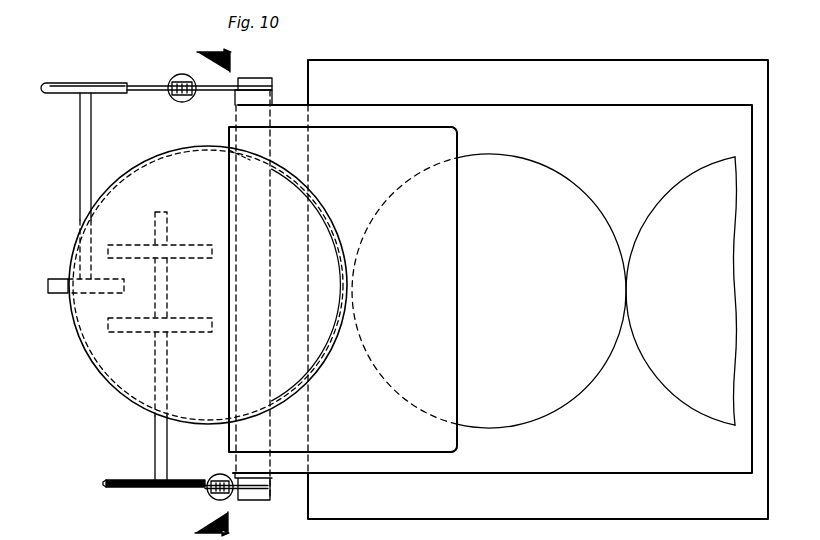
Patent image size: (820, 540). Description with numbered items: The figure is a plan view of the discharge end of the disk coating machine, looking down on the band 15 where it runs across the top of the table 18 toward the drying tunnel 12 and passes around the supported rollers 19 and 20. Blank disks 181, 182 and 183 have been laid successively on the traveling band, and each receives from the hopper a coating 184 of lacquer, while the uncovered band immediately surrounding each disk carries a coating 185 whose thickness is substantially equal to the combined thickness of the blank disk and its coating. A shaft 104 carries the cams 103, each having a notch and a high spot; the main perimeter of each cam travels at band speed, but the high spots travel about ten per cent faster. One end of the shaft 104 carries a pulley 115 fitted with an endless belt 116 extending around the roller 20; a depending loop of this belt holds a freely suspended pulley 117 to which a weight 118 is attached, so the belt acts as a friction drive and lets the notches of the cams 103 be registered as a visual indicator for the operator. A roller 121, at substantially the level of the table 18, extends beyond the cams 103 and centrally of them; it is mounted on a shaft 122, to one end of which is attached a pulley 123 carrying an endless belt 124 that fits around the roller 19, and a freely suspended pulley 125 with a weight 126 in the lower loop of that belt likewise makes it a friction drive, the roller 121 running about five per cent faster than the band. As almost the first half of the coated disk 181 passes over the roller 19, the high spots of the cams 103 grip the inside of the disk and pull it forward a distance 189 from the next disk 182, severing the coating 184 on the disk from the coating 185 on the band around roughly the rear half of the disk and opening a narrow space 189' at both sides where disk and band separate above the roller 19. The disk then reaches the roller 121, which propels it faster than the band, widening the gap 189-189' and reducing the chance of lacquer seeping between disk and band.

The drying tunnel 12 is at (213, 292).
The band 15 is at (655, 105).
The table 18 is at (626, 60).
The roller 19 is at (272, 98).
The roller 20 is at (258, 495).
The cam 103 is at (190, 244).
The shaft 104 is at (134, 448).
The pulley 115 is at (118, 488).
The endless belt 116 is at (144, 488).
The freely suspended pulley 117 is at (214, 477).
The weight 118 is at (208, 492).
The roller 121 is at (56, 290).
The shaft 122 is at (80, 148).
The pulley 123 is at (68, 83).
The endless belt 124 is at (147, 86).
The freely suspended pulley 125 is at (178, 74).
The weight 126 is at (172, 96).
The blank disk 181 is at (208, 285).
The blank disk 182 is at (541, 291).
The blank disk 183 is at (681, 291).
The coating 184 is at (452, 370).
The coating 185 is at (452, 144).
The distance 189 is at (399, 291).
The narrow open space 189' is at (204, 288).